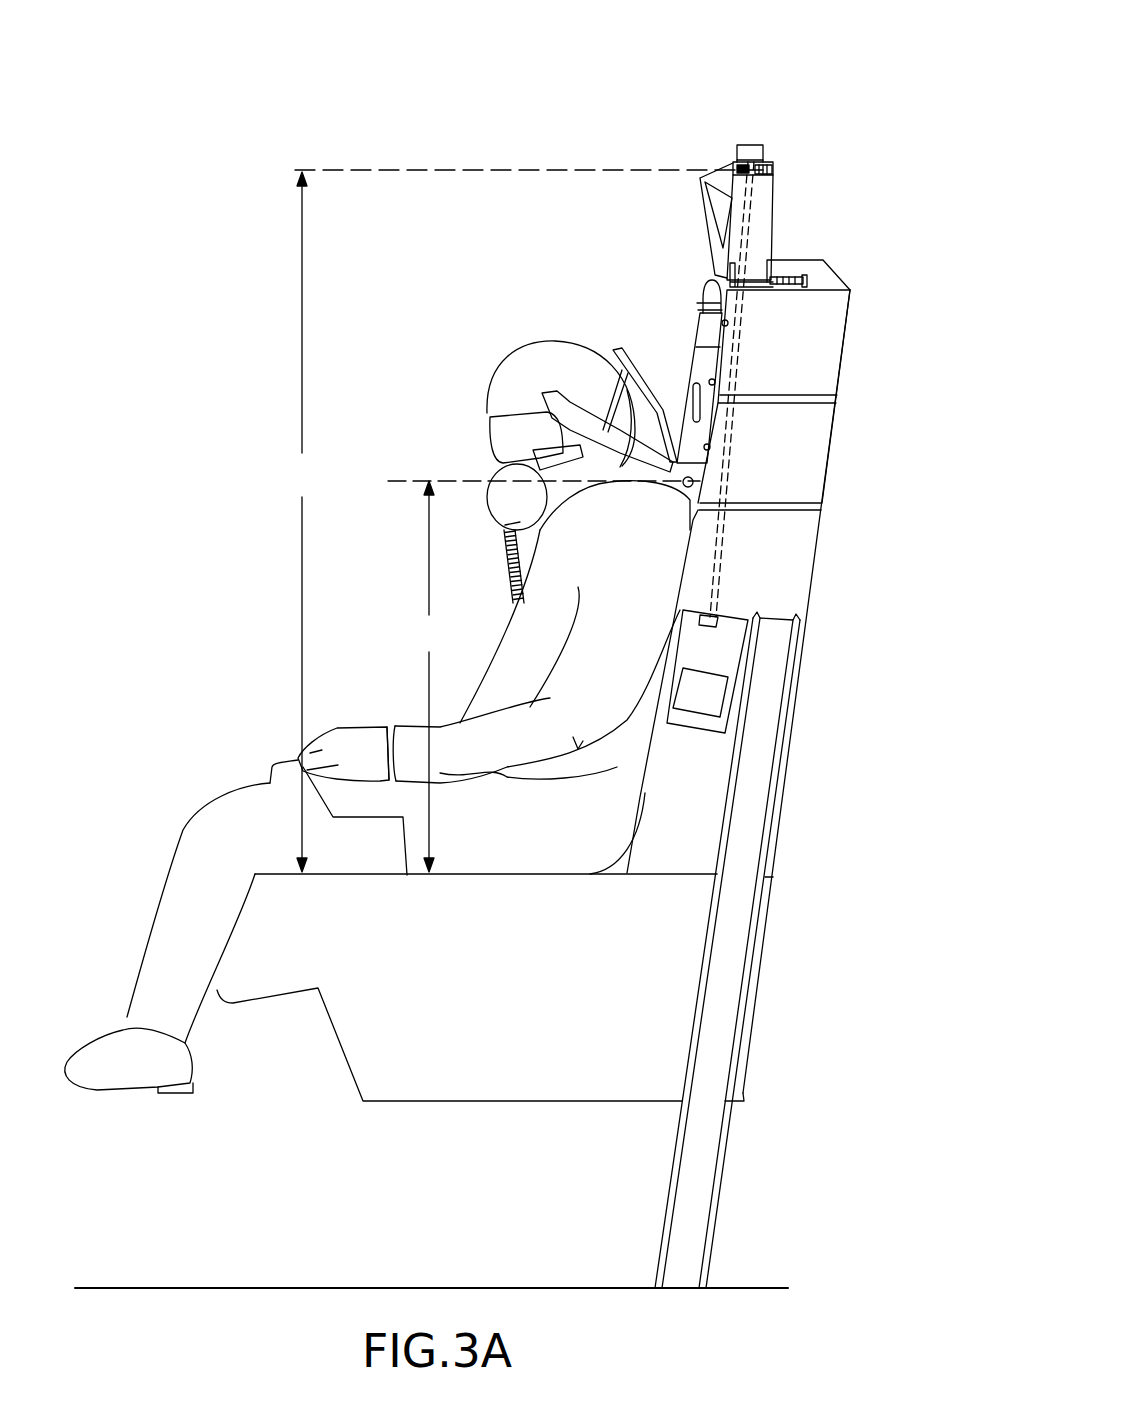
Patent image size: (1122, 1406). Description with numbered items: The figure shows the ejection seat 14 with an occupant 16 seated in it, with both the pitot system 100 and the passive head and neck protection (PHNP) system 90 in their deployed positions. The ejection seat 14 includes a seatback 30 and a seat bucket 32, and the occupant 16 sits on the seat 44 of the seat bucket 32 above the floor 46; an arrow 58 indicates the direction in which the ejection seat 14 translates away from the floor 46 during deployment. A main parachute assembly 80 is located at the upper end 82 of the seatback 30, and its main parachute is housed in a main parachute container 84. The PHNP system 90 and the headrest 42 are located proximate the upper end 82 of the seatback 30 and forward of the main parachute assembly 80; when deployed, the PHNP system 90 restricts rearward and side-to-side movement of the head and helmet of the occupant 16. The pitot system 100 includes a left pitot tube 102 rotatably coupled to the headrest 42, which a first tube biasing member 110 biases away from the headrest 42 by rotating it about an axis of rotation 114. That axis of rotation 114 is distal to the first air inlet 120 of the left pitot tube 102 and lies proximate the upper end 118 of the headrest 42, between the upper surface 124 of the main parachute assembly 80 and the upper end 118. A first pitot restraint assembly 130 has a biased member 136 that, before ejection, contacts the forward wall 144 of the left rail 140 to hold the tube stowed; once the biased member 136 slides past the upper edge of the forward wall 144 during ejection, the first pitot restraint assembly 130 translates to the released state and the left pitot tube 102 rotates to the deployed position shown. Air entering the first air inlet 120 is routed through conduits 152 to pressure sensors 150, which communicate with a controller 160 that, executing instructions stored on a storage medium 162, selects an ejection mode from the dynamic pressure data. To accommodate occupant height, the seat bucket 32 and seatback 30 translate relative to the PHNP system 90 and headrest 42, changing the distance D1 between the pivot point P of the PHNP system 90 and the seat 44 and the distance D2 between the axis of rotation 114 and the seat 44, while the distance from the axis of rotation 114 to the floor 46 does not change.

The ejection seat 14 is at (560, 130).
The occupant 16 is at (490, 380).
The seatback 30 is at (762, 557).
The seat bucket 32 is at (492, 1012).
The headrest 42 is at (770, 205).
The seat 44 is at (493, 880).
The floor 46 is at (260, 1288).
The arrow 58 is at (895, 574).
The main parachute assembly 80 is at (833, 430).
The upper end 82 is at (768, 503).
The main parachute container 84 is at (772, 387).
The passive head and neck protection (PHNP) system 90 is at (619, 321).
The pitot system 100 is at (745, 114).
The left pitot tube 102 is at (733, 168).
The first tube biasing member 110 is at (773, 170).
The axis of rotation 114 is at (620, 170).
The upper end 118 is at (772, 168).
The first air inlet 120 is at (737, 154).
The upper surface 124 is at (805, 265).
The first pitot restraint assembly 130 is at (830, 269).
The biased member 136 is at (775, 285).
The left rail 140 is at (739, 936).
The forward wall 144 is at (707, 953).
The pressure sensors 150 is at (705, 620).
The conduits 152 is at (698, 572).
The controller 160 is at (691, 662).
The storage medium 162 is at (685, 707).
The pivot point P is at (683, 483).
The distance D1 is at (432, 676).
The distance D2 is at (302, 522).